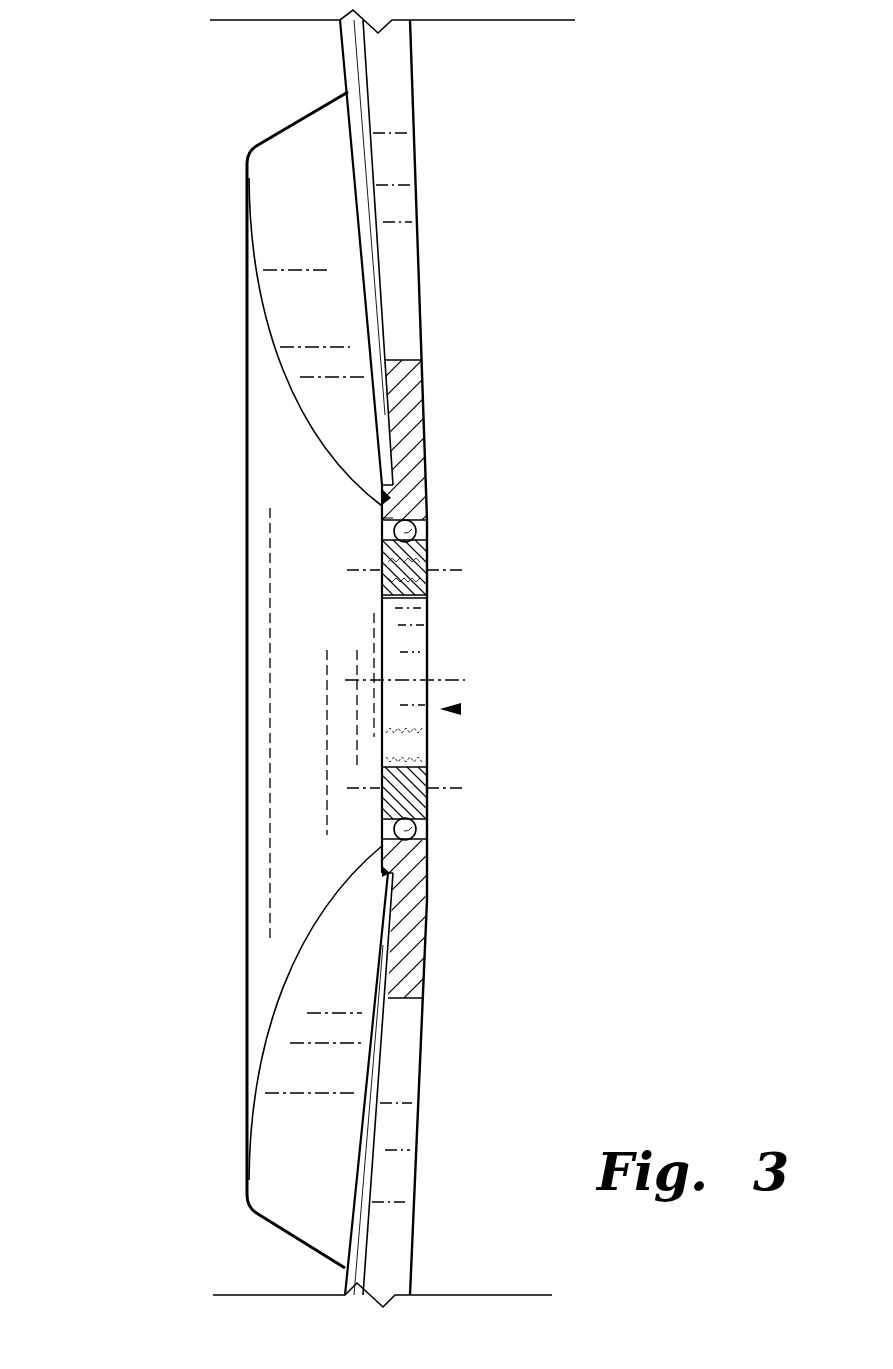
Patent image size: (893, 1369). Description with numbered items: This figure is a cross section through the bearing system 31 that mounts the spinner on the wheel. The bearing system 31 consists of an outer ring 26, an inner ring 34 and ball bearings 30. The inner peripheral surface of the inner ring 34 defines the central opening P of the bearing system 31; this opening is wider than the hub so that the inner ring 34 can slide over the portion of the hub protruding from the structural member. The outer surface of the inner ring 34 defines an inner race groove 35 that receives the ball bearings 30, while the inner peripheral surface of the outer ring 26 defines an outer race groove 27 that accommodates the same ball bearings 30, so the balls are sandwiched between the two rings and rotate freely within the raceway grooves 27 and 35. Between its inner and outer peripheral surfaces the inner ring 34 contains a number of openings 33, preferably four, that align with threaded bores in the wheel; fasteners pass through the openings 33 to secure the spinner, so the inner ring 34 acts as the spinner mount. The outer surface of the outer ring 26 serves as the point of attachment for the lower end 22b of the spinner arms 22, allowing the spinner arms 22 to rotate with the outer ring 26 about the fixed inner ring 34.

The spinner arms 22 is at (247, 235).
The lower end of the spinner arms 22b is at (426, 403).
The outer ring 26 is at (426, 513).
The outer race groove 27 is at (382, 518).
The ball bearings 30 is at (427, 523).
The bearing system 31 is at (386, 500).
The openings 33 is at (380, 582).
The inner ring 34 is at (427, 543).
The inner race groove 35 is at (380, 548).
The central opening P is at (458, 708).